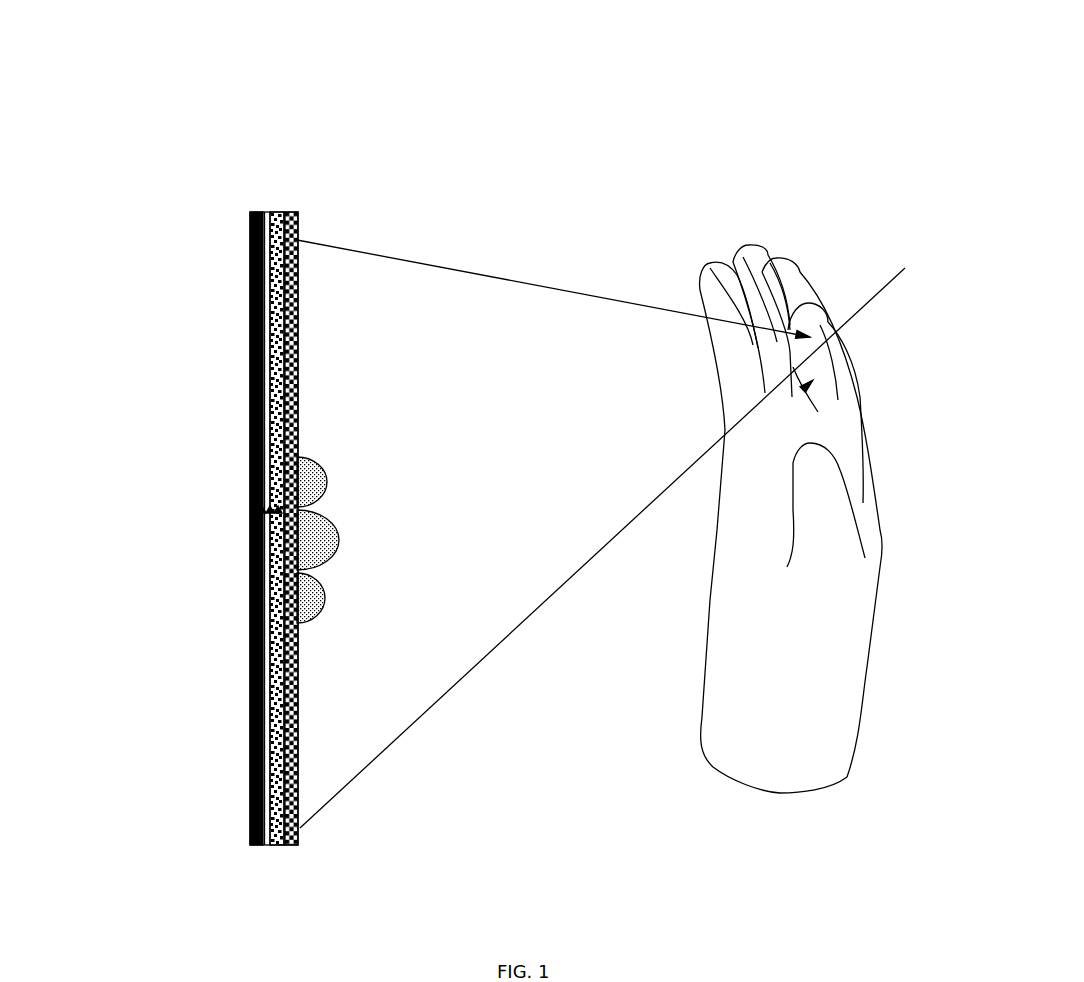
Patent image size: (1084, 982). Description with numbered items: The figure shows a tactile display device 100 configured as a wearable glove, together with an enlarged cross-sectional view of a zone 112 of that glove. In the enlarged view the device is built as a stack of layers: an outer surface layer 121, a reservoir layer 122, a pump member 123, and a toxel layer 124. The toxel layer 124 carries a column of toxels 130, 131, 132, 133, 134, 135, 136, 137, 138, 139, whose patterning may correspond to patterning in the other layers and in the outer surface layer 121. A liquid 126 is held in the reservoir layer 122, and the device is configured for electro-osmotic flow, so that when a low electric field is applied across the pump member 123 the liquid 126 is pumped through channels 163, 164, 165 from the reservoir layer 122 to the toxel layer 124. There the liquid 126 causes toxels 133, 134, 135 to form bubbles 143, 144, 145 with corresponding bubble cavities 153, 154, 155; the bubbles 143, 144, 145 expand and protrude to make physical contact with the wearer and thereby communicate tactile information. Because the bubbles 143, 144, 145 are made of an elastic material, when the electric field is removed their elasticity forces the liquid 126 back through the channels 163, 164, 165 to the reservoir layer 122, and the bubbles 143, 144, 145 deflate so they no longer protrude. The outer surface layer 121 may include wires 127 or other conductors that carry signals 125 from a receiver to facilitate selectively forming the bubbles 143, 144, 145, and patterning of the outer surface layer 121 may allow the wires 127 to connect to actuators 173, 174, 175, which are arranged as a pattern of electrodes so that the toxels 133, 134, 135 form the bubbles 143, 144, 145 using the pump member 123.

The tactile display device 100 is at (690, 255).
The zone 112 is at (242, 98).
The outer surface layer 121 is at (250, 333).
The reservoir layer 122 is at (263, 272).
The pump member 123 is at (272, 212).
The toxel layer 124 is at (295, 212).
The signals 125 is at (258, 508).
The liquid 126 is at (250, 790).
The wires 127 is at (250, 515).
The toxel 130 is at (297, 273).
The toxel 131 is at (297, 335).
The toxel 132 is at (297, 400).
The toxel 133 is at (297, 455).
The toxel 134 is at (297, 517).
The toxel 135 is at (297, 585).
The toxel 136 is at (295, 652).
The toxel 137 is at (293, 715).
The toxel 138 is at (297, 762).
The toxel 139 is at (288, 832).
The bubble 143 is at (322, 460).
The bubble 144 is at (338, 530).
The bubble 145 is at (322, 595).
The bubble cavity 153 is at (315, 480).
The bubble cavity 154 is at (327, 542).
The bubble cavity 155 is at (318, 607).
The channel 163 is at (273, 480).
The channel 164 is at (285, 539).
The channel 165 is at (287, 595).
The actuator 173 is at (283, 475).
The actuator 174 is at (292, 537).
The actuator 175 is at (290, 597).